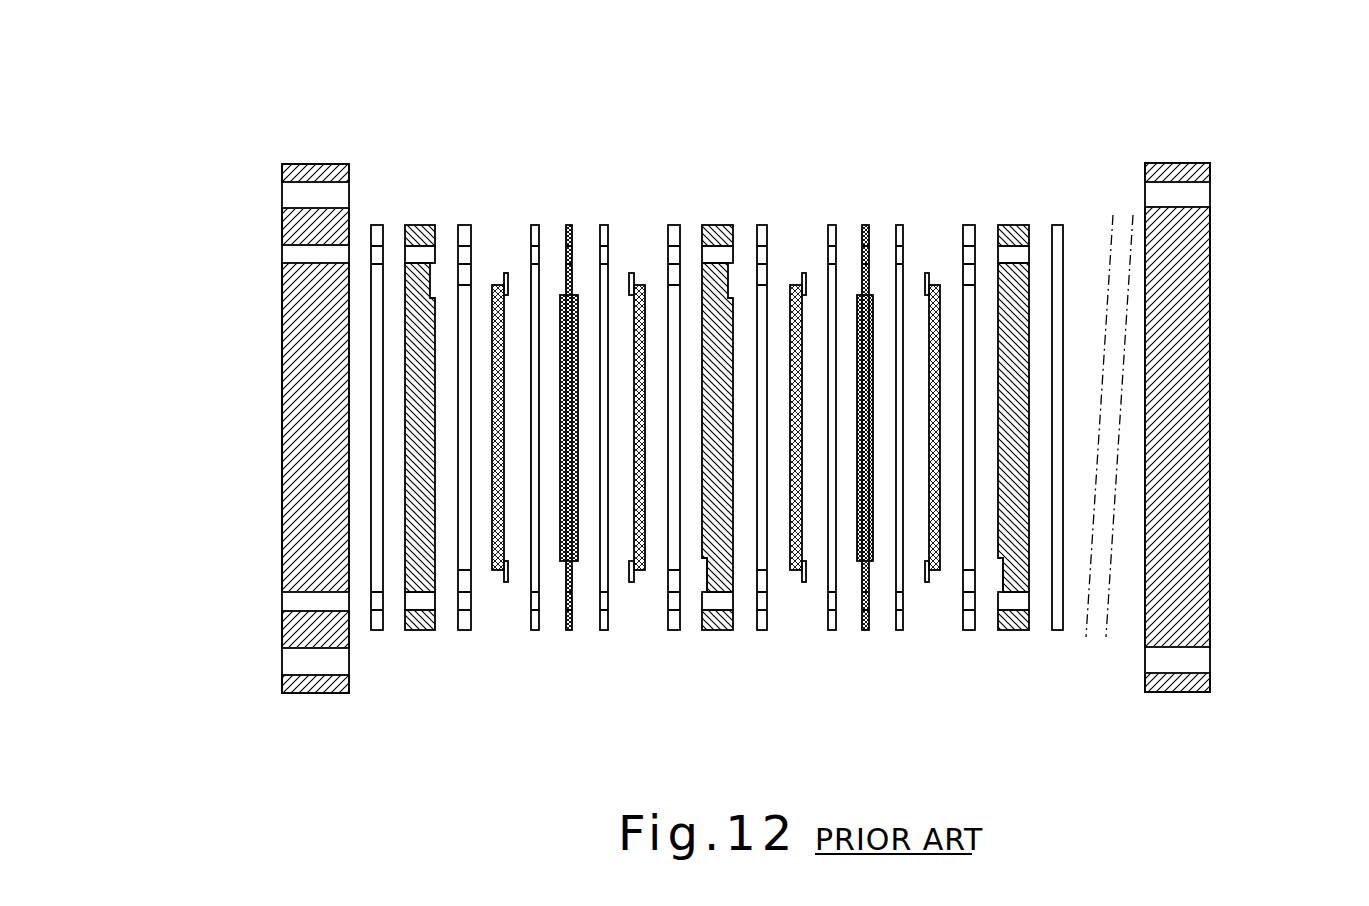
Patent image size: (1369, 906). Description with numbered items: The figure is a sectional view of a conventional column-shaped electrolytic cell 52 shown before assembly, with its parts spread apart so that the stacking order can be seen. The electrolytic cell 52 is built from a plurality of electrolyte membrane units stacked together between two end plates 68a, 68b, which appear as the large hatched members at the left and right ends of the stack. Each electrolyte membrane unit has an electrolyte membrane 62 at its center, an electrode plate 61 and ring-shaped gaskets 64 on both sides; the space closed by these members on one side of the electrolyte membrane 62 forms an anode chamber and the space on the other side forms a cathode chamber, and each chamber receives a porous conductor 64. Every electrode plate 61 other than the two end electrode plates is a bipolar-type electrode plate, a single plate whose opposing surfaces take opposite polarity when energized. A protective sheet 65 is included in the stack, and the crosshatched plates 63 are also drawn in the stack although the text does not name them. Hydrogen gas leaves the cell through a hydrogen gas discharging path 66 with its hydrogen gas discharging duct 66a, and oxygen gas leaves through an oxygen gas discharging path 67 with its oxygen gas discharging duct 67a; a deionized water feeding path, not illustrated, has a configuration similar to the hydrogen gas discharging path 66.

The electrolytic cell 52 is at (675, 112).
The electrode plate 61 is at (422, 628).
The electrolyte membrane 62 is at (568, 225).
The friction plate 63 is at (633, 283).
The ring-shaped gasket 64 is at (378, 225).
The protective sheet 65 is at (604, 632).
The hydrogen gas discharging path 66 is at (432, 283).
The hydrogen gas discharging duct 66a is at (418, 258).
The oxygen gas discharging path 67 is at (704, 572).
The oxygen gas discharging duct 67a is at (412, 599).
The end plate 68a is at (300, 437).
The end plate 68b is at (1212, 428).